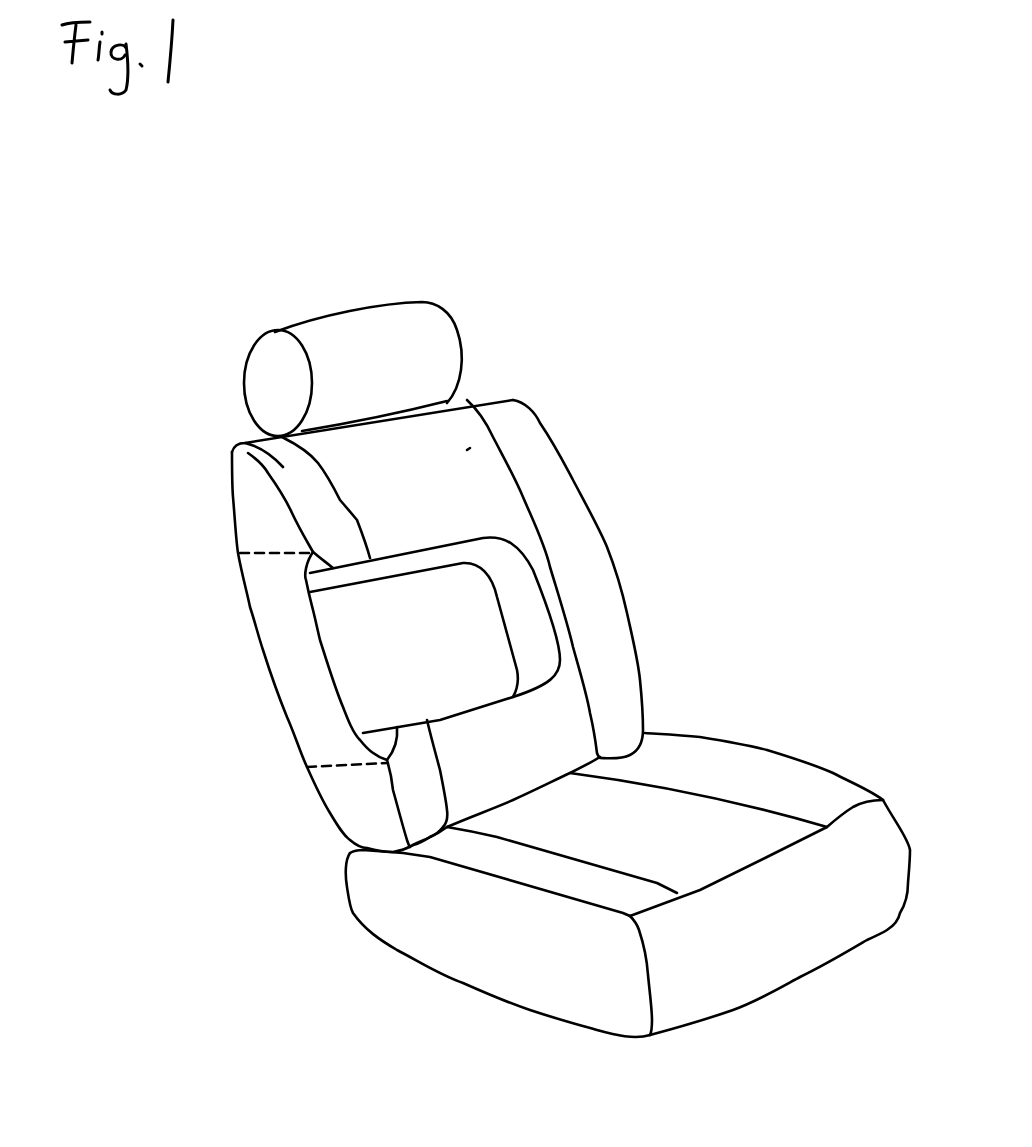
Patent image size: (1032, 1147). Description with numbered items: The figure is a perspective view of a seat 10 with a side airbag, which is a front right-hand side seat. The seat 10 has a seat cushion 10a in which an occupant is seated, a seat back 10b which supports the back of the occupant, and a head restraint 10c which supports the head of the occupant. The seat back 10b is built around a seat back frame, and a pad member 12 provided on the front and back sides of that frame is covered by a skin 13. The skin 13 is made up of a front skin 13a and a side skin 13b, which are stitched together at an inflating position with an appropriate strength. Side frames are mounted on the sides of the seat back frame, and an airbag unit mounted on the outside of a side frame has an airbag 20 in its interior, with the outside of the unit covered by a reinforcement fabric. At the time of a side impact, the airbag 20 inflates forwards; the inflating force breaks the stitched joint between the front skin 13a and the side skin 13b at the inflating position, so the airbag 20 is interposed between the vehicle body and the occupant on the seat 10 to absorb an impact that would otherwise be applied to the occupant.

The seat 10 is at (693, 298).
The seat cushion 10a is at (713, 850).
The seat back 10b is at (480, 477).
The head restraint 10c is at (345, 353).
The pad member 12 is at (467, 450).
The skin 13 is at (440, 427).
The front skin 13a is at (260, 447).
The side skin 13b is at (263, 525).
The airbag 20 is at (517, 585).